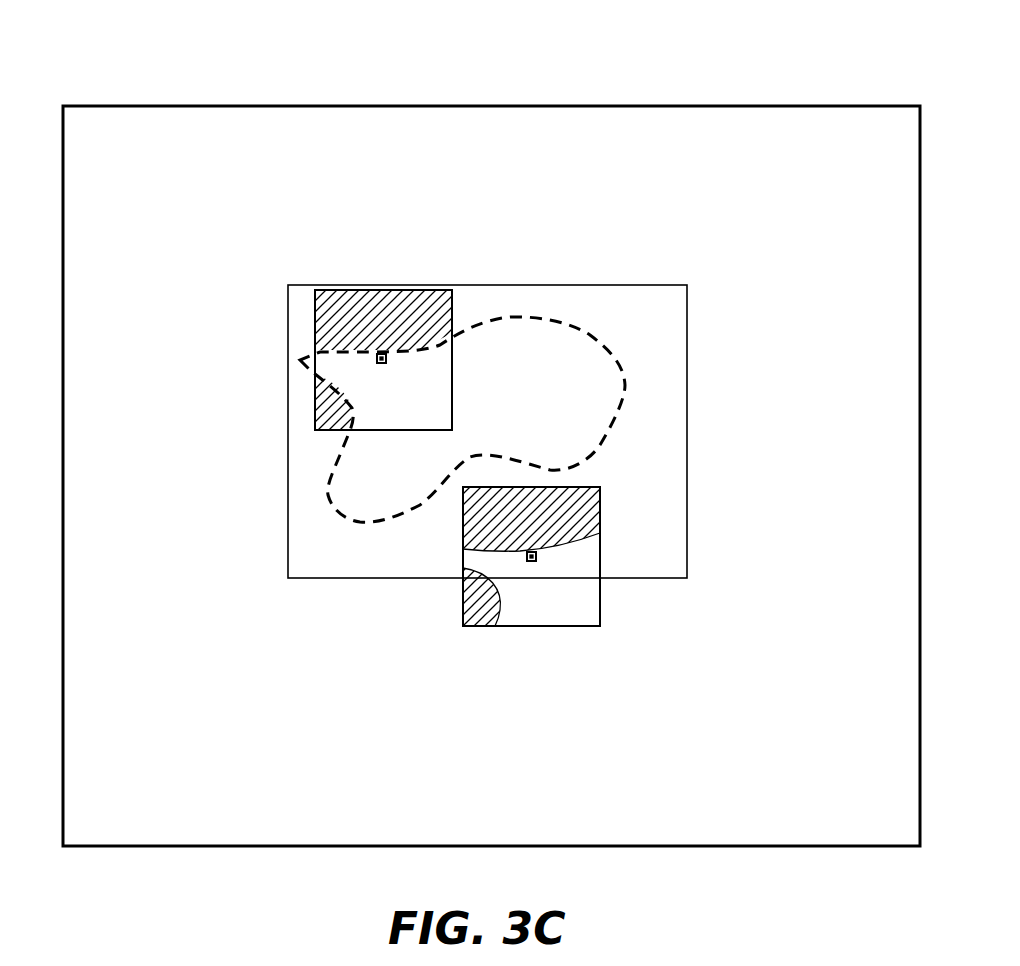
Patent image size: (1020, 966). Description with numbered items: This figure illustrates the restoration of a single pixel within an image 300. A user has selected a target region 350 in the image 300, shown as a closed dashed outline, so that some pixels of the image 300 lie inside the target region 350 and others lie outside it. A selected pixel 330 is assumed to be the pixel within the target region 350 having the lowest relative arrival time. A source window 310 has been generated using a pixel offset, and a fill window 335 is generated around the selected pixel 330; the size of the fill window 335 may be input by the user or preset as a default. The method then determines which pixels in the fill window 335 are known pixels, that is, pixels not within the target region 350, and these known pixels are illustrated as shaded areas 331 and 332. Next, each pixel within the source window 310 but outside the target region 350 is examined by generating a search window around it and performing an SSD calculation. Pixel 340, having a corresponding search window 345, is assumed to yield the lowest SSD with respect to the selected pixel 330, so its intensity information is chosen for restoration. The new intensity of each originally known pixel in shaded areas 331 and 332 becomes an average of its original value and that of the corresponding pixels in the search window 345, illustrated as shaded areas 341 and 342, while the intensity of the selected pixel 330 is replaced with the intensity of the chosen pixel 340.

The image 300 is at (416, 105).
The source window 310 is at (655, 285).
The selected pixel 330 is at (383, 365).
The shaded area 331 is at (355, 305).
The shaded area 332 is at (322, 400).
The fill window 335 is at (455, 372).
The pixel 340 is at (538, 556).
The shaded area 341 is at (568, 506).
The shaded area 342 is at (466, 618).
The search window 345 is at (600, 612).
The target region 350 is at (615, 358).